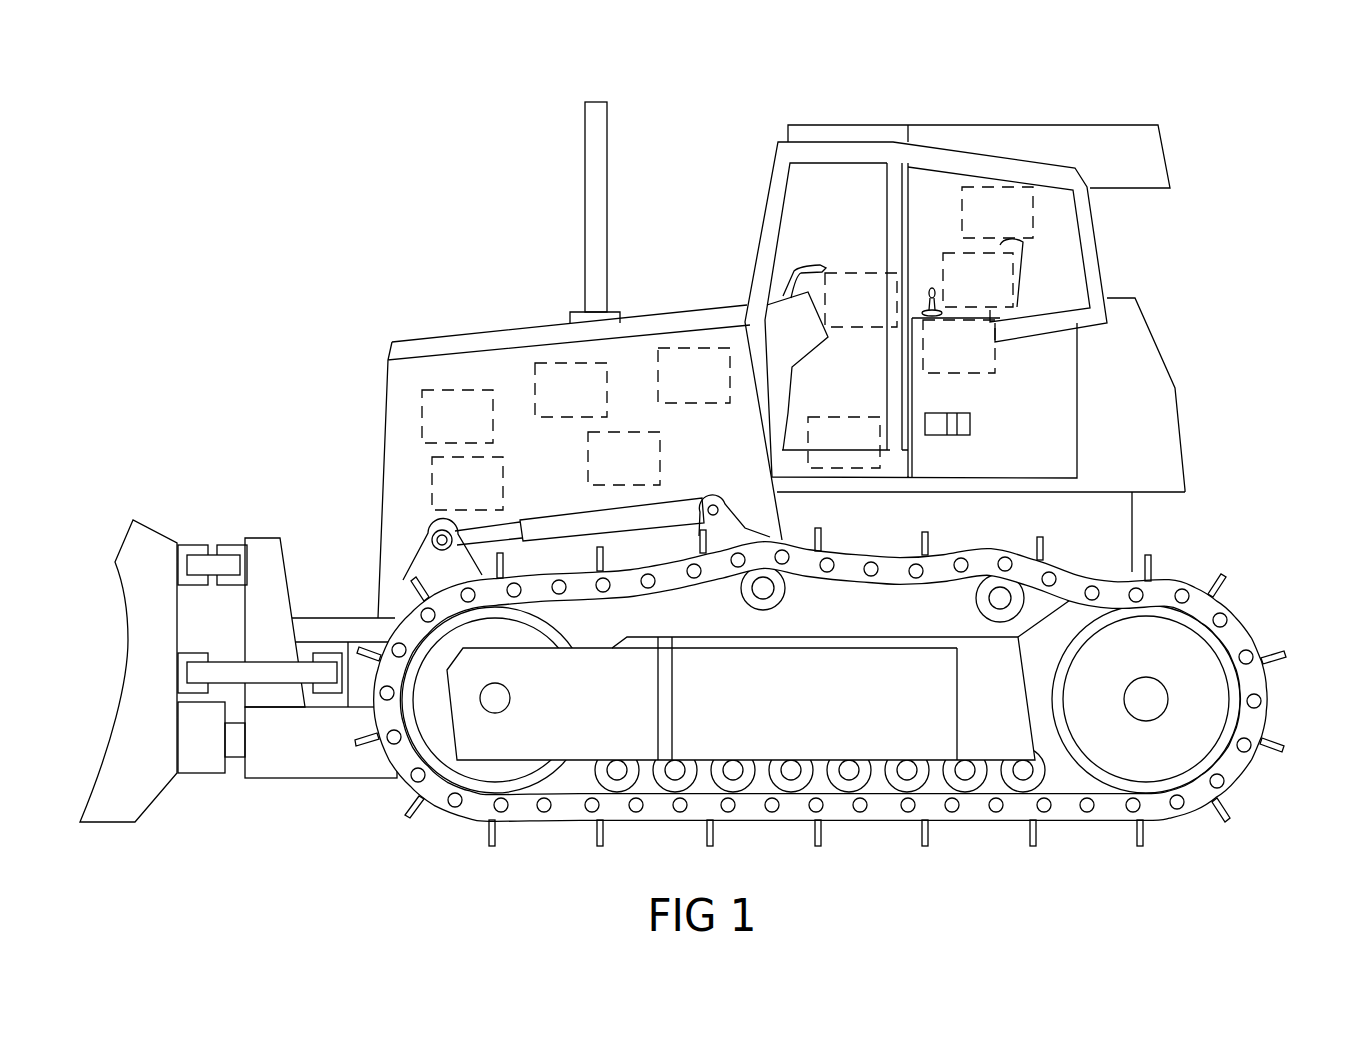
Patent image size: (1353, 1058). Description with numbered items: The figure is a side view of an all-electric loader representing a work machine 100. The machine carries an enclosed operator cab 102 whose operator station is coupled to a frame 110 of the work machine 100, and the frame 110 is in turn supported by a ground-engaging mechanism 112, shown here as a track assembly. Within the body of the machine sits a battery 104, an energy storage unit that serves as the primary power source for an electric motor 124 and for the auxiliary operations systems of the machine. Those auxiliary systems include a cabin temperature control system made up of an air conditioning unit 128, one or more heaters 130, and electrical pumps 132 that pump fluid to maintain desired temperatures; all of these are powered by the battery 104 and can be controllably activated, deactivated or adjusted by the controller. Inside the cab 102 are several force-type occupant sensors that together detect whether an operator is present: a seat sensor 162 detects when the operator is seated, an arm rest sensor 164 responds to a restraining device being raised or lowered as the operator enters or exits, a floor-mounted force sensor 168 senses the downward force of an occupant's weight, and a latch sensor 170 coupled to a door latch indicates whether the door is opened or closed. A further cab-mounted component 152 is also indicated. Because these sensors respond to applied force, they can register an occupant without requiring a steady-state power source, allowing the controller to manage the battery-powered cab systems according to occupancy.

The work machine 100 is at (1133, 65).
The cab 102 is at (872, 105).
The battery 104 is at (602, 471).
The frame 110 is at (1180, 425).
The ground-engaging mechanism 112 is at (1268, 704).
The electric motor 124 is at (445, 496).
The air conditioning unit 128 is at (549, 402).
The heater 130 is at (672, 387).
The electrical pump 132 is at (435, 429).
The display device 152 is at (975, 226).
The seat sensor 162 is at (937, 359).
The arm rest sensor 164 is at (956, 292).
The force sensor 168 is at (822, 456).
The latch sensor 170 is at (839, 312).